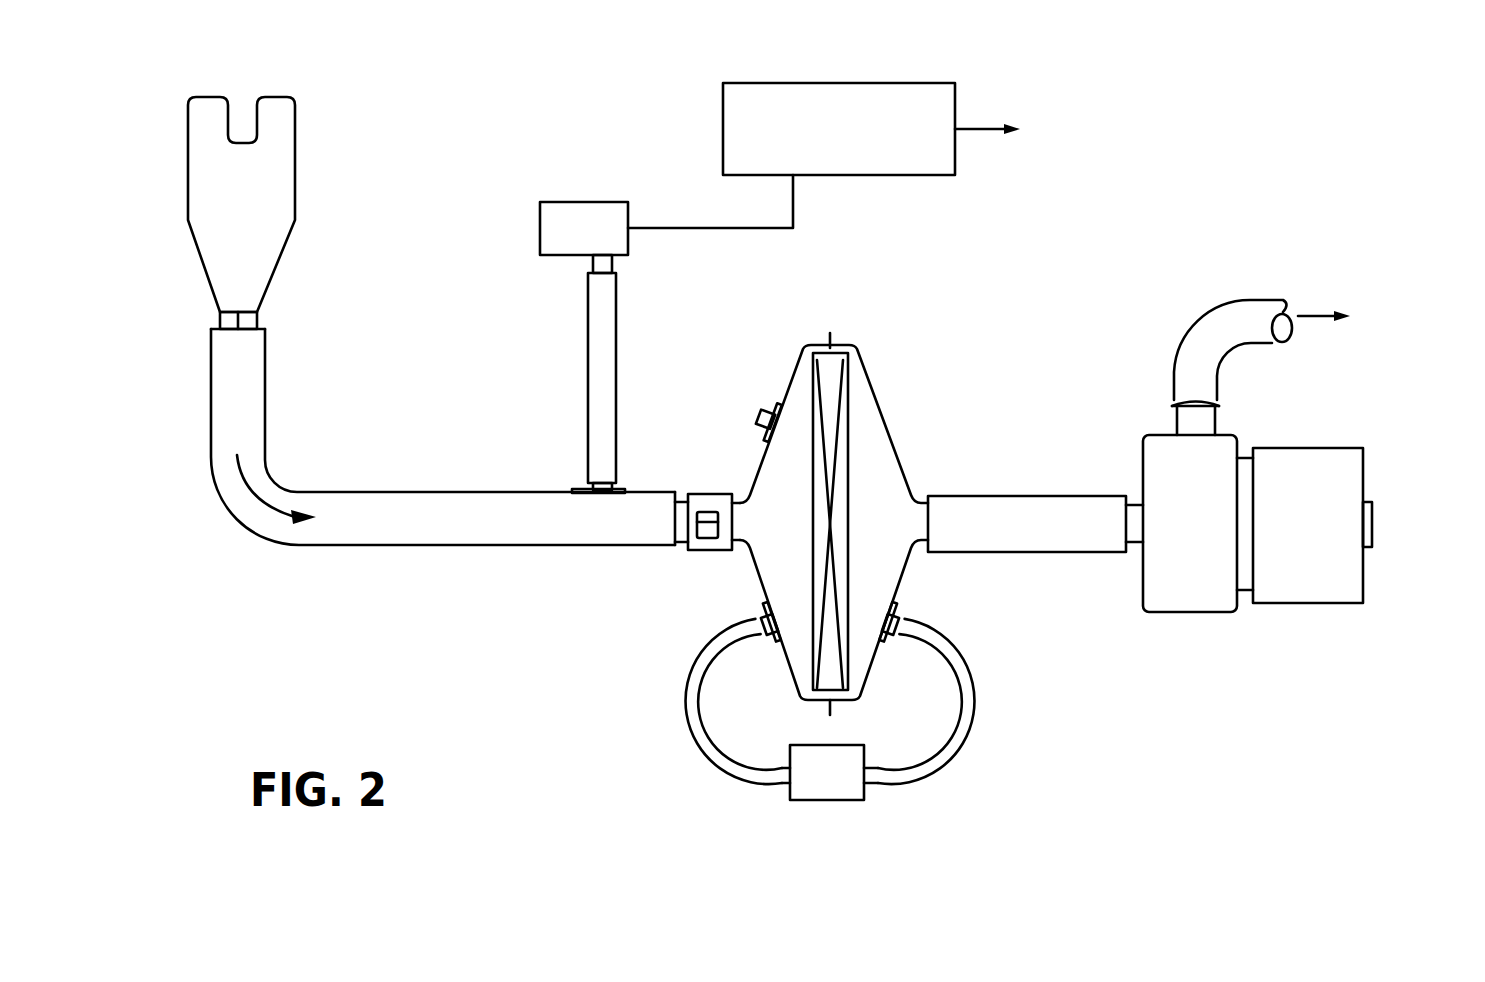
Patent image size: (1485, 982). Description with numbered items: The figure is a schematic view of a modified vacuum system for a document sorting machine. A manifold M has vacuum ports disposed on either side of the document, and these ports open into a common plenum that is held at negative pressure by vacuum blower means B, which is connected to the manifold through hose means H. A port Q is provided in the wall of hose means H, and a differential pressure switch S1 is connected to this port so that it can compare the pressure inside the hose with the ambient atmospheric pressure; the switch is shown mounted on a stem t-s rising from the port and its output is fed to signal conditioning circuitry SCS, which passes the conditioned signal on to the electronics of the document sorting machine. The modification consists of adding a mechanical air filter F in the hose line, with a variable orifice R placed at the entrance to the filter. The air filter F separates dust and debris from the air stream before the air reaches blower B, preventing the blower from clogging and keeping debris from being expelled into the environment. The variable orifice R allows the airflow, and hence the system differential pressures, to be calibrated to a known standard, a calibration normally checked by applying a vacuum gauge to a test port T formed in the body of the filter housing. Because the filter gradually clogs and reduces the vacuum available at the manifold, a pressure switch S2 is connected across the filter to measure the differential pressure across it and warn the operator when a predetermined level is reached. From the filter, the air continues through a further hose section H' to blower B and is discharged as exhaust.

The manifold M is at (166, 168).
The hose means H is at (449, 470).
The differential pressure switch S1 is at (557, 253).
The sensor stem t-s is at (587, 357).
The port Q is at (585, 486).
The variable orifice R is at (703, 551).
The mechanical air filter F is at (886, 418).
The test port T is at (758, 413).
The pressure switch S2 is at (820, 800).
The outlet hose H' is at (1035, 494).
The vacuum blower means B is at (1153, 580).
The signal conditioning circuitry SCS is at (722, 122).